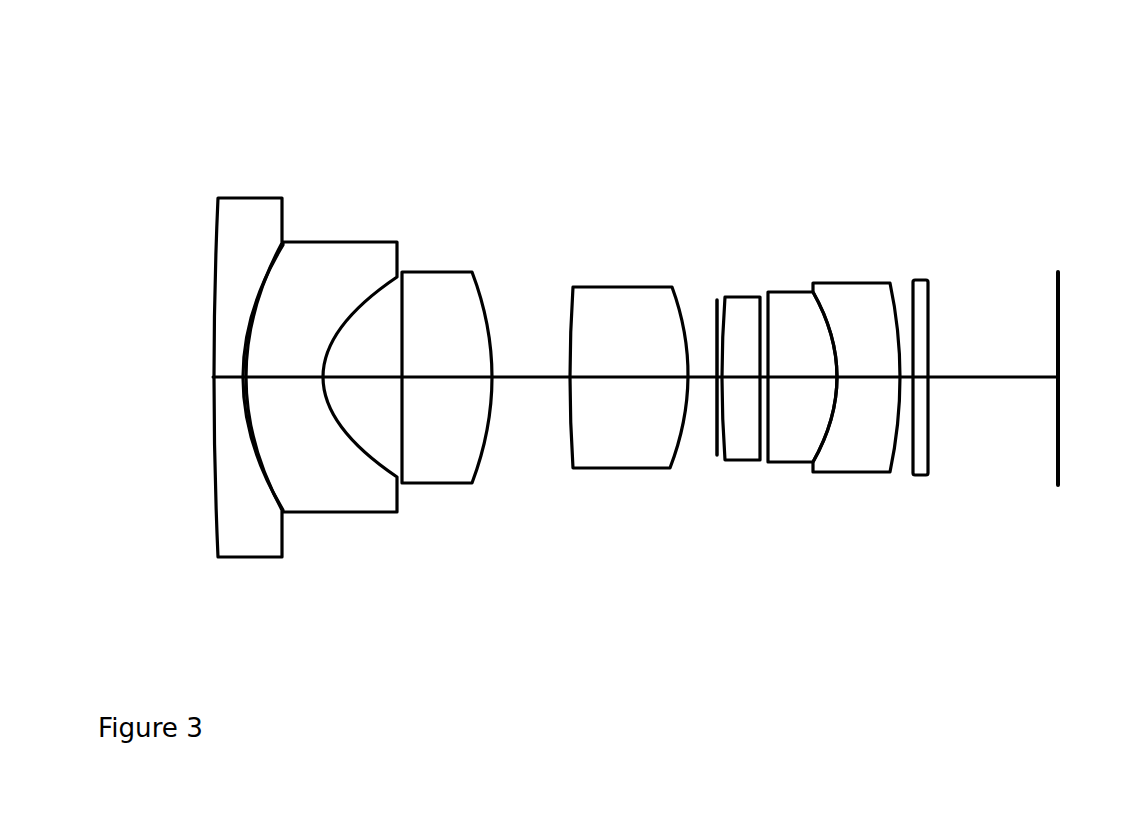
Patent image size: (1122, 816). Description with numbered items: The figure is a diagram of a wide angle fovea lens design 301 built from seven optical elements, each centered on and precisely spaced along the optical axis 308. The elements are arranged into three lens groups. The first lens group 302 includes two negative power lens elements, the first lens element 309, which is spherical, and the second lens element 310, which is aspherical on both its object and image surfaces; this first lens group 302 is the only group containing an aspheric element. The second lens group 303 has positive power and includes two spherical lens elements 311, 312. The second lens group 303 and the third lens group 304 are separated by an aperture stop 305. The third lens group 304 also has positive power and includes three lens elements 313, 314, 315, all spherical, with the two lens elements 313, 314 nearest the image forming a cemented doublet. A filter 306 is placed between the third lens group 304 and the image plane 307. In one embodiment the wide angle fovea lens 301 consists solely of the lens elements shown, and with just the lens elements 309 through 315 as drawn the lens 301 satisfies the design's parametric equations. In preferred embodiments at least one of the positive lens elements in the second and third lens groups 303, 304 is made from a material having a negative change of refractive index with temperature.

The wide angle fovea lens design 301 is at (551, 641).
The first lens group 302 is at (195, 137).
The second lens group 303 is at (693, 167).
The third lens group 304 is at (748, 170).
The aperture stop 305 is at (713, 487).
The filter 306 is at (934, 253).
The image plane 307 is at (1060, 246).
The optical axis 308 is at (1008, 405).
The first lens element 309 is at (242, 539).
The second lens element 310 is at (344, 503).
The lens element 311 is at (452, 452).
The lens element 312 is at (638, 455).
The lens element 313 is at (746, 445).
The lens element 314 is at (792, 443).
The lens element 315 is at (868, 469).